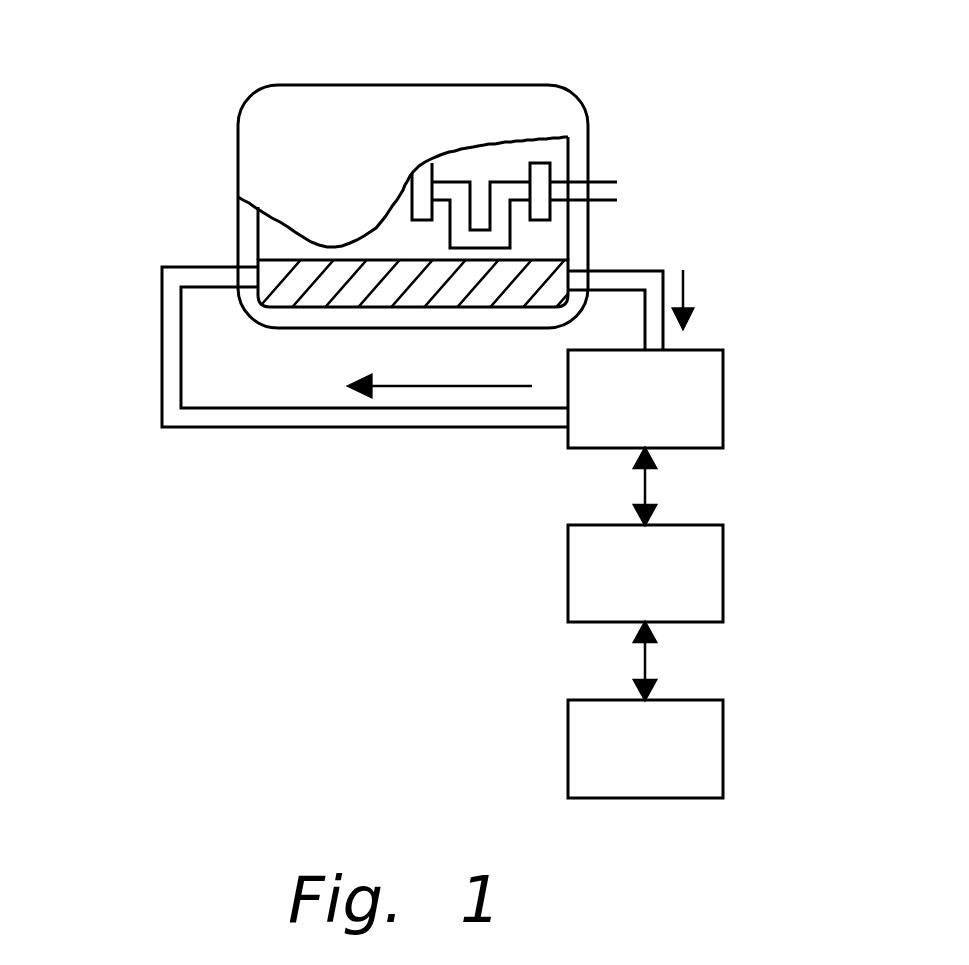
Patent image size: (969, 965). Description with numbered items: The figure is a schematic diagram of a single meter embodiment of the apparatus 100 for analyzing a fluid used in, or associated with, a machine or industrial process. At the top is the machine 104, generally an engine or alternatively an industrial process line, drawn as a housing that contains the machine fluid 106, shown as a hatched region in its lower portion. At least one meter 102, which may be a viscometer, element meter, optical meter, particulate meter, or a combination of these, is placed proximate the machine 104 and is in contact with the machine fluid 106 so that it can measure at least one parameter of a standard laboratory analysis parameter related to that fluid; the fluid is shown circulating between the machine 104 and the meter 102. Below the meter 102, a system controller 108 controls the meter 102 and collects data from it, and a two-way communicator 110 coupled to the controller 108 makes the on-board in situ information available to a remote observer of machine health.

The apparatus 100 is at (140, 80).
The meter 102 is at (725, 397).
The machine 104 is at (588, 157).
The machine fluid 106 is at (367, 310).
The system controller 108 is at (725, 573).
The two-way communicator 110 is at (725, 750).